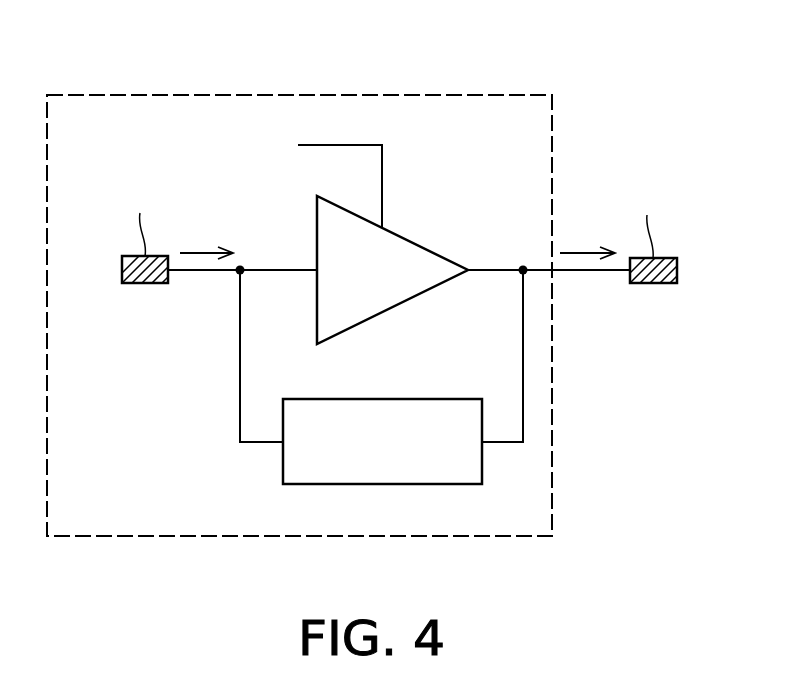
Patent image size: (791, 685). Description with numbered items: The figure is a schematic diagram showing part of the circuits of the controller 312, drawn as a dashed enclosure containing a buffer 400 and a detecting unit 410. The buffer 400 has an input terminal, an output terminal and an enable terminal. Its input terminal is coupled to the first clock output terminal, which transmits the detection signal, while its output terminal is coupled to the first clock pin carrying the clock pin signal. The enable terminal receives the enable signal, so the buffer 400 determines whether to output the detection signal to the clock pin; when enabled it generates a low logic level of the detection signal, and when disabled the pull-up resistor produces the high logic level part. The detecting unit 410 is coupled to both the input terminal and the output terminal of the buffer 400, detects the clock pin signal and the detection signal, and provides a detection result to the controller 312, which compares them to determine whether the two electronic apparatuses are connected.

The controller 312 is at (432, 93).
The buffer 400 is at (425, 246).
The detecting unit 410 is at (283, 470).